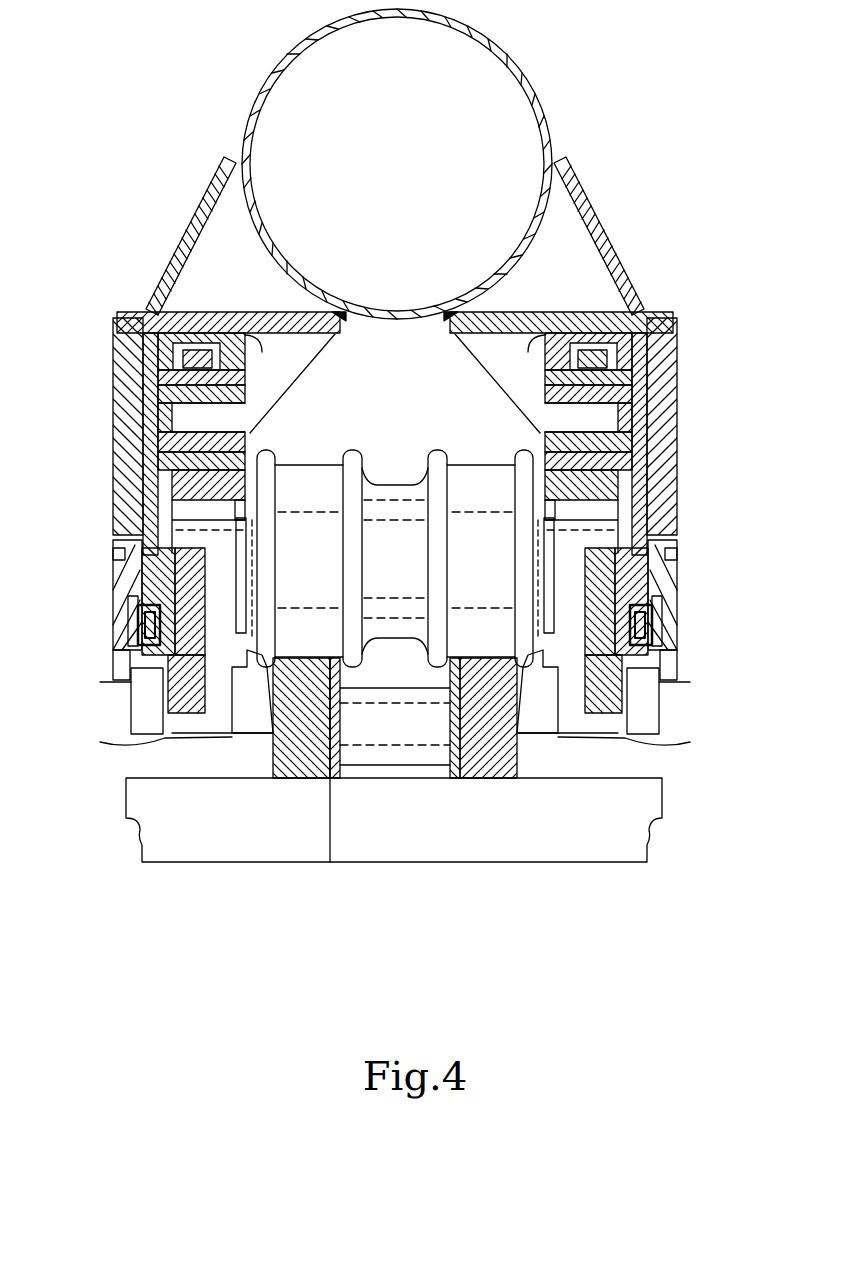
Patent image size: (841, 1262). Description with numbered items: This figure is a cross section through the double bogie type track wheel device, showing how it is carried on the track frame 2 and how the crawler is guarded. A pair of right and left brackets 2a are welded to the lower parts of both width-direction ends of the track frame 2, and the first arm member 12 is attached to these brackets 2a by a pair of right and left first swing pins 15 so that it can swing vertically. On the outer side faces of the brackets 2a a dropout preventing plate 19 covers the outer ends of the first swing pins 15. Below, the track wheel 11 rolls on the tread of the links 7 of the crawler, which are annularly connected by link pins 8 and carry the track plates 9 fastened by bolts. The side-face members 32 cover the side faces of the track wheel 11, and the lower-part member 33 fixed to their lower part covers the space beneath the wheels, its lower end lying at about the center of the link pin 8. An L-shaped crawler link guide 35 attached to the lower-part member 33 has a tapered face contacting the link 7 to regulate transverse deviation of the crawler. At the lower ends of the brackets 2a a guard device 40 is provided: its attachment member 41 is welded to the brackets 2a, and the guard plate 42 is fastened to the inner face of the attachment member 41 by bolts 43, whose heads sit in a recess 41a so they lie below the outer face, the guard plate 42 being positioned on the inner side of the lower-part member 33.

The track frame 2 is at (200, 211).
The bracket 2a is at (116, 328).
The dropout preventing plate 19 is at (113, 386).
The first swing pin 15 is at (113, 438).
The first arm member 12 is at (115, 478).
The guard device 40 is at (100, 545).
The guard plate 42 is at (125, 562).
The bolt 43 is at (128, 598).
The recess 41a is at (136, 622).
The attachment member 41 is at (142, 640).
The side-face member 32 is at (121, 664).
The lower-part member 33 is at (140, 701).
The crawler link guide 35 is at (156, 737).
The link 7 is at (270, 757).
The link pin 8 is at (512, 742).
The track plate 9 is at (640, 812).
The track wheel 11 is at (330, 862).